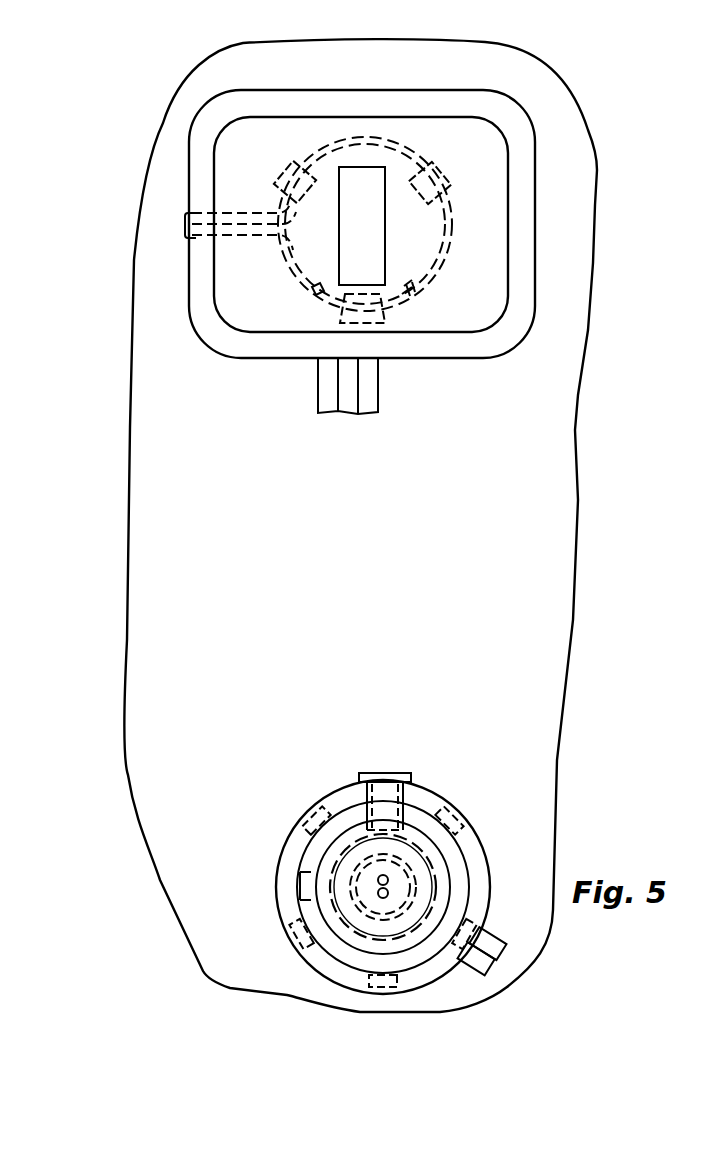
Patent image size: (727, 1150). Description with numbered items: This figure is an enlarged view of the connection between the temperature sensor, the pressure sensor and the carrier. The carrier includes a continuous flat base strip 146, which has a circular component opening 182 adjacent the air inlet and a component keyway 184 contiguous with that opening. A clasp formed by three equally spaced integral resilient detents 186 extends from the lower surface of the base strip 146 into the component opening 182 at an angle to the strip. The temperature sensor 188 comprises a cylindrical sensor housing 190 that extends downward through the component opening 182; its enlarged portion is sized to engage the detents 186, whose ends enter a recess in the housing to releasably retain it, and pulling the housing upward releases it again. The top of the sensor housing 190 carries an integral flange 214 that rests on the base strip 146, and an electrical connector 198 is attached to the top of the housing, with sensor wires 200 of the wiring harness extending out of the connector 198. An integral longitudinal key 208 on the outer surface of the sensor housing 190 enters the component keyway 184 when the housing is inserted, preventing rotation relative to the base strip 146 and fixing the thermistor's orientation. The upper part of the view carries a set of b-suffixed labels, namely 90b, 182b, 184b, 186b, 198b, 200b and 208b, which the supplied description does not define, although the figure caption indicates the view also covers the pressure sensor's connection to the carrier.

The base strip 146 is at (547, 500).
The display window 90b is at (190, 137).
The rotary ring 182b is at (410, 298).
The contact tabs 186b is at (290, 170).
The bottom tab 198b is at (315, 292).
The lead lines 208b is at (256, 215).
The connector bracket 184b is at (198, 235).
The connector strips 200b is at (332, 398).
The component opening 182 is at (298, 879).
The temperature sensor 188 is at (281, 864).
The sensor housing 190 is at (344, 893).
The sensor wires 200 is at (386, 893).
The integral flange 214 is at (437, 798).
The resilient detents 186 is at (302, 815).
The component keyway 184 is at (366, 772).
The longitudinal key 208 is at (390, 772).
The electrical connector 198 is at (483, 912).